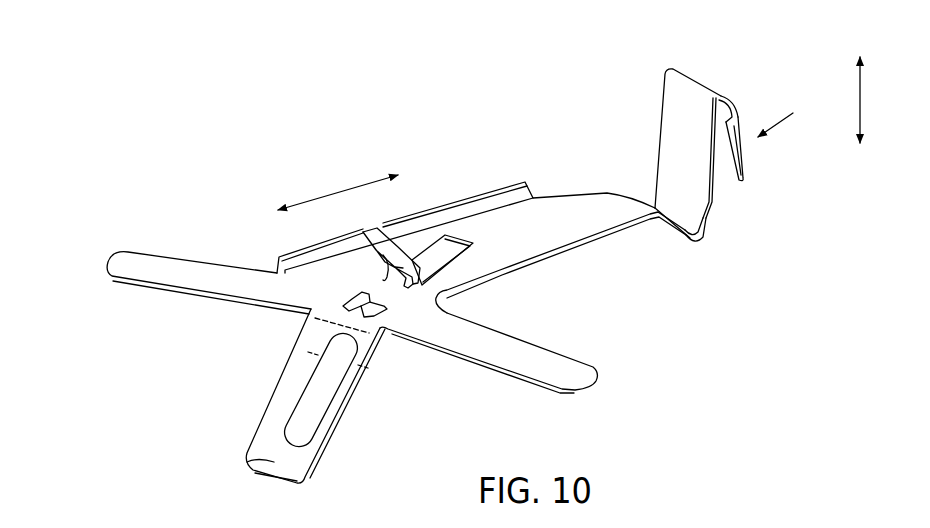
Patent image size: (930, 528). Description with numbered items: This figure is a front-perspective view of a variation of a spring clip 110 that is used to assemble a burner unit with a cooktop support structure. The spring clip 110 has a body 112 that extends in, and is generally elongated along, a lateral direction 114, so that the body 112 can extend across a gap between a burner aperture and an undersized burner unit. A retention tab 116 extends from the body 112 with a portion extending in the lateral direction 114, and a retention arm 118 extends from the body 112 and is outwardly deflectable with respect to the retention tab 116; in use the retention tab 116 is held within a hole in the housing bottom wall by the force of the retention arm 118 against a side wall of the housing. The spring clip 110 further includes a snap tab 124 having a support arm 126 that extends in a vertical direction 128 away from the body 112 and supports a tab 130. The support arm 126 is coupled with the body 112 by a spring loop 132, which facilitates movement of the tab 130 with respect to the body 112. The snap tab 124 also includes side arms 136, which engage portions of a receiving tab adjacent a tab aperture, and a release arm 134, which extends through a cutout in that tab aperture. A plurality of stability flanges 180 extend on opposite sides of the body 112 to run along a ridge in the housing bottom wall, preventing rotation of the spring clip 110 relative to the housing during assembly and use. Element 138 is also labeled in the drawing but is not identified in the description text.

The spring clip 110 is at (375, 85).
The body 112 is at (540, 247).
The lateral direction 114 is at (340, 193).
The retention tab 116 is at (345, 305).
The retention arm 118 is at (400, 245).
The snap tab 124 is at (723, 67).
The support arm 126 is at (680, 127).
The vertical direction 128 is at (863, 100).
The tab 130 is at (794, 120).
The spring loop 132 is at (691, 245).
The release arm 134 is at (743, 155).
The side arms 136 is at (737, 110).
The slotted front arm 138 is at (243, 460).
The stability flanges 180 is at (127, 265).